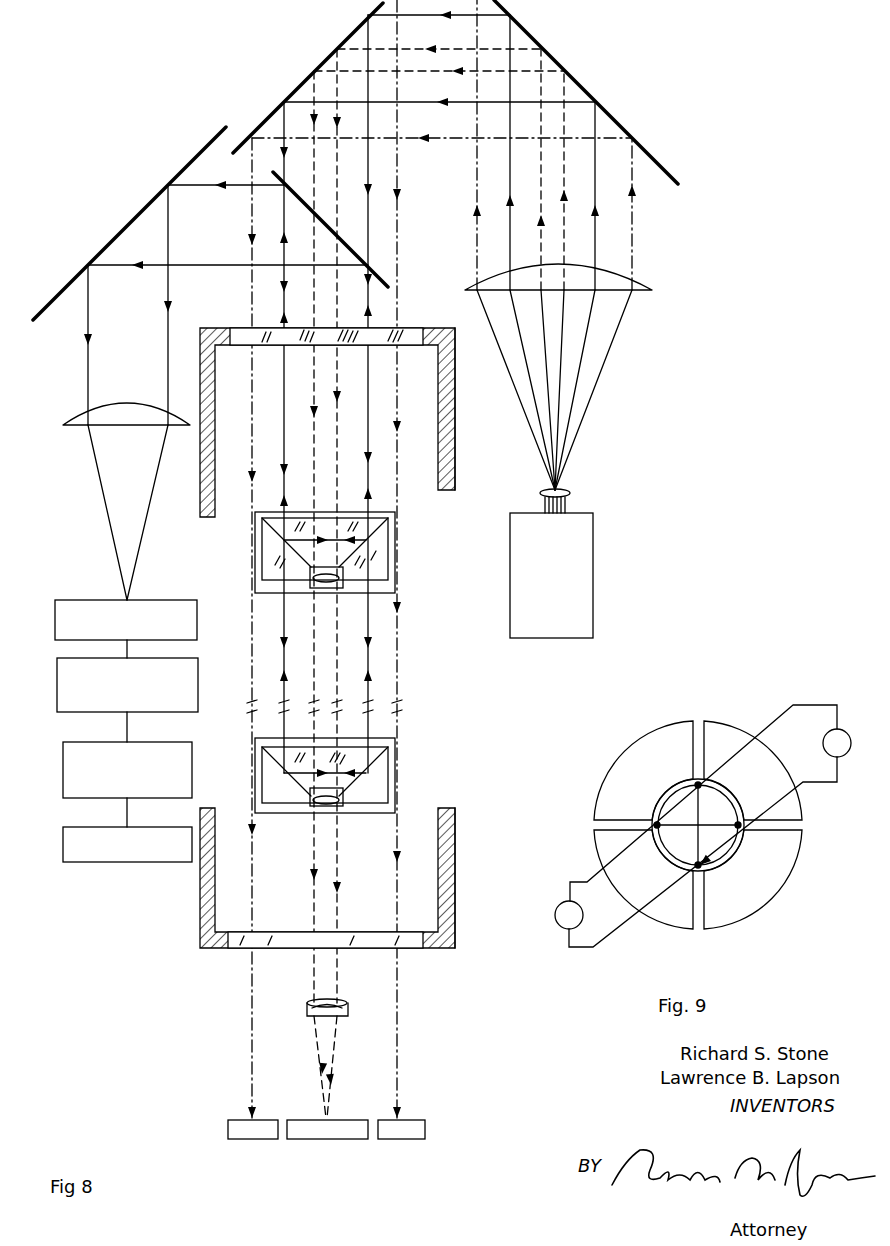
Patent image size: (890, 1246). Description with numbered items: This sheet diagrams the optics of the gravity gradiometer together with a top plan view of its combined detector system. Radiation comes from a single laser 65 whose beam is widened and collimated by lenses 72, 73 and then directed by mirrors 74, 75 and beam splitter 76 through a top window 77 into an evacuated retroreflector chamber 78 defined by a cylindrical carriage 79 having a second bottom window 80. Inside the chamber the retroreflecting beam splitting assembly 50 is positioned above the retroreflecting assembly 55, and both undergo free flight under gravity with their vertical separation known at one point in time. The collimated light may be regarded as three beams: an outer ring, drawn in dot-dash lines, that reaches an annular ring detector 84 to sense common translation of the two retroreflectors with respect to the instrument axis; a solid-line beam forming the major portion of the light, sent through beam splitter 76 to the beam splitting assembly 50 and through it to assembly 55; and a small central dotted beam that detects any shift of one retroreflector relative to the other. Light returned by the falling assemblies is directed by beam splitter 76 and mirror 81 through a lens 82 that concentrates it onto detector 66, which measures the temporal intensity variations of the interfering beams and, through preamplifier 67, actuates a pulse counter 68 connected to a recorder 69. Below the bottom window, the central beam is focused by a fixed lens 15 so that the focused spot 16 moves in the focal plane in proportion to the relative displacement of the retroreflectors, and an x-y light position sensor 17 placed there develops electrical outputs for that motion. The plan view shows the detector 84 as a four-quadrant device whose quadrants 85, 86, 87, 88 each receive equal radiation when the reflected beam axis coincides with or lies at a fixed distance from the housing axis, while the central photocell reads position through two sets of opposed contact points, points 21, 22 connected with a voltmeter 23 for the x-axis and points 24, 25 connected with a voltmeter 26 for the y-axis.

In FIG. 8, the fixed lens 15 is at (298, 1001).
In FIG. 8, the focused spot 16 is at (325, 1117).
In FIG. 8, the x-y light position sensor 17 is at (333, 1125).
In FIG. 9, the x-y light position sensor 17 is at (680, 807).
In FIG. 9, the contact point 21 is at (700, 782).
In FIG. 9, the contact point 22 is at (700, 868).
In FIG. 9, the voltmeter 23 is at (841, 729).
In FIG. 9, the contact point 24 is at (652, 827).
In FIG. 9, the contact point 25 is at (745, 822).
In FIG. 9, the voltmeter 26 is at (563, 928).
In FIG. 8, the retroreflecting beam splitting assembly 50 is at (398, 549).
In FIG. 8, the retroreflecting assembly 55 is at (400, 758).
In FIG. 8, the laser 65 is at (585, 582).
In FIG. 8, the detector 66 is at (95, 600).
In FIG. 8, the preamplifier 67 is at (105, 712).
In FIG. 8, the pulse counter 68 is at (63, 770).
In FIG. 8, the recorder 69 is at (63, 835).
In FIG. 8, the lens 72 is at (572, 495).
In FIG. 8, the lens 73 is at (637, 285).
In FIG. 8, the mirror 74 is at (652, 158).
In FIG. 8, the mirror 75 is at (333, 55).
In FIG. 8, the beam splitter 76 is at (368, 262).
In FIG. 8, the top window 77 is at (385, 328).
In FIG. 8, the retroreflector chamber 78 is at (432, 394).
In FIG. 8, the cylindrical carriage 79 is at (446, 448).
In FIG. 8, the bottom window 80 is at (405, 948).
In FIG. 8, the mirror 81 is at (145, 208).
In FIG. 8, the lens 82 is at (115, 418).
In FIG. 8, the annular ring detector 84 is at (405, 1125).
In FIG. 9, the annular ring detector 84 is at (699, 821).
In FIG. 9, the quadrant 85 is at (757, 762).
In FIG. 9, the quadrant 86 is at (637, 757).
In FIG. 9, the quadrant 87 is at (680, 920).
In FIG. 9, the quadrant 88 is at (770, 883).